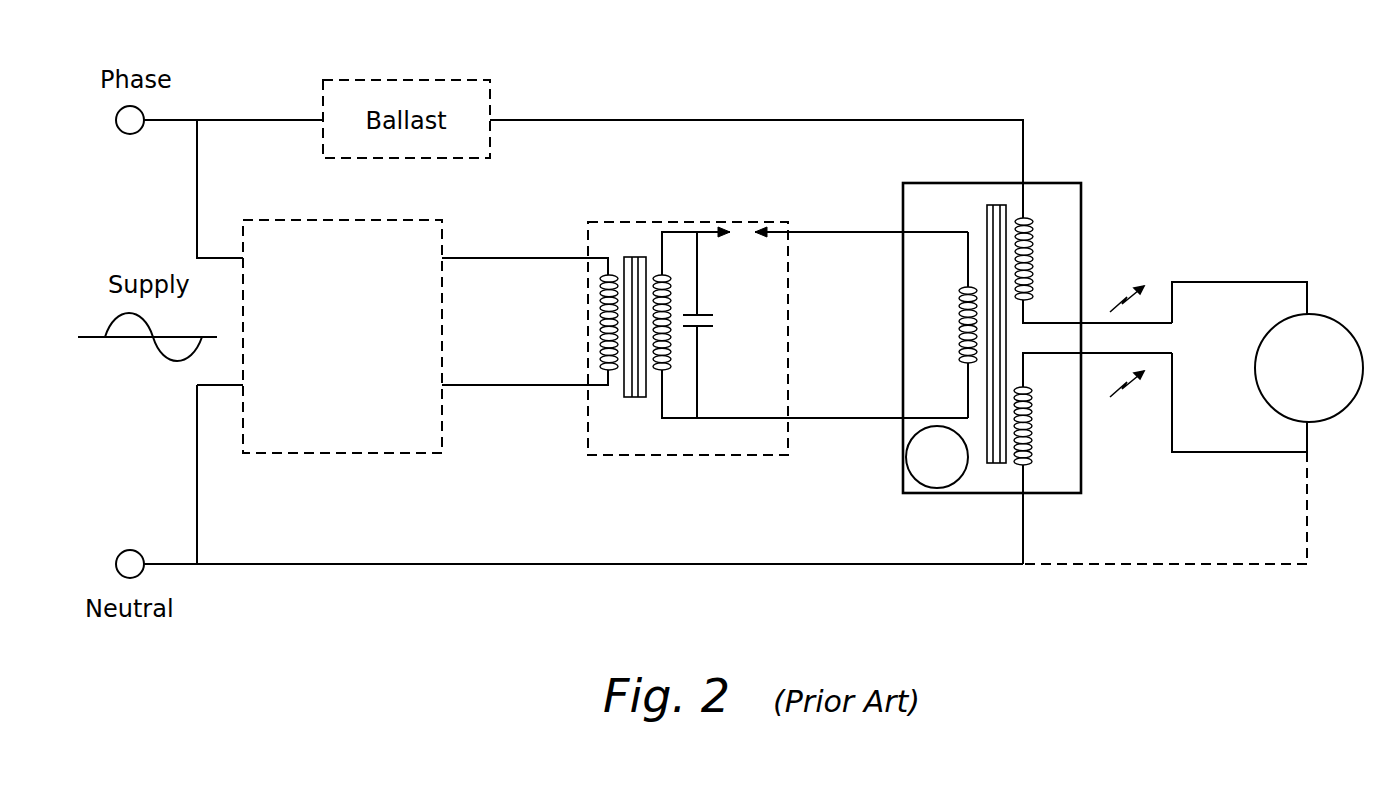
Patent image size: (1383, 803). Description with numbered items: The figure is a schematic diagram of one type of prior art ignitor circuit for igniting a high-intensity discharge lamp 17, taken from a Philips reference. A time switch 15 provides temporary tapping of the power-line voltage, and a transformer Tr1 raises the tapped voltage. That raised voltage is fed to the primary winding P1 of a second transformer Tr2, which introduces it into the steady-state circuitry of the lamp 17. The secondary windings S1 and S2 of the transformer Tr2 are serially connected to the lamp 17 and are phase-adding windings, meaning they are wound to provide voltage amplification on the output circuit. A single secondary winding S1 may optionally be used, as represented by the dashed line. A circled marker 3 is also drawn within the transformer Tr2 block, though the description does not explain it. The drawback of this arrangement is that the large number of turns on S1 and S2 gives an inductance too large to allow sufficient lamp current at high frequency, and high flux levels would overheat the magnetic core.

The time switch 15 is at (387, 453).
The lamp 17 is at (1332, 318).
The ignition transformer unit 3 is at (937, 457).
The transformer Tr1 is at (617, 443).
The transformer Tr2 is at (1010, 354).
The primary winding P1 is at (944, 325).
The secondary winding S1 is at (1042, 258).
The secondary winding S2 is at (1040, 435).